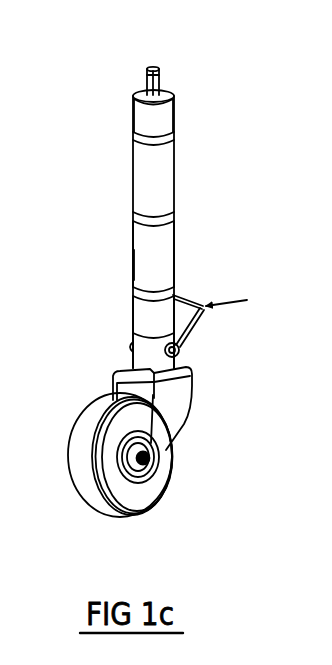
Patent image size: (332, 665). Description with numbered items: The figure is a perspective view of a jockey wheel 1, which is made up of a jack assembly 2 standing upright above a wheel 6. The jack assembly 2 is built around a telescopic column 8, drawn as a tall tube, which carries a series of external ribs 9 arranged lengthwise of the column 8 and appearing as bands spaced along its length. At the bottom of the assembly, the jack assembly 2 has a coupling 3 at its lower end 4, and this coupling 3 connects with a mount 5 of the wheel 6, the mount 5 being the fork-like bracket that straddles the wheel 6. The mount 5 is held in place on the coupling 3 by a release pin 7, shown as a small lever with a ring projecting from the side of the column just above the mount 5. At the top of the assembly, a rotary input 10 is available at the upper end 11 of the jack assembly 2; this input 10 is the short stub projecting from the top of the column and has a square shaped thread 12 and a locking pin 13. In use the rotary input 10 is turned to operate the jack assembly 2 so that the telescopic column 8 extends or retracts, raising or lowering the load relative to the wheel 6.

The jockey wheel 1 is at (175, 167).
The jack assembly 2 is at (178, 240).
The coupling 3 is at (133, 330).
The lower end 4 is at (133, 312).
The mount 5 is at (130, 360).
The wheel 6 is at (72, 428).
The release pin 7 is at (182, 352).
The telescopic column 8 is at (175, 263).
The external ribs 9 is at (176, 133).
The rotary input 10 is at (146, 80).
The upper end 11 is at (175, 104).
The square shaped thread 12 is at (156, 67).
The locking pin 13 is at (162, 73).